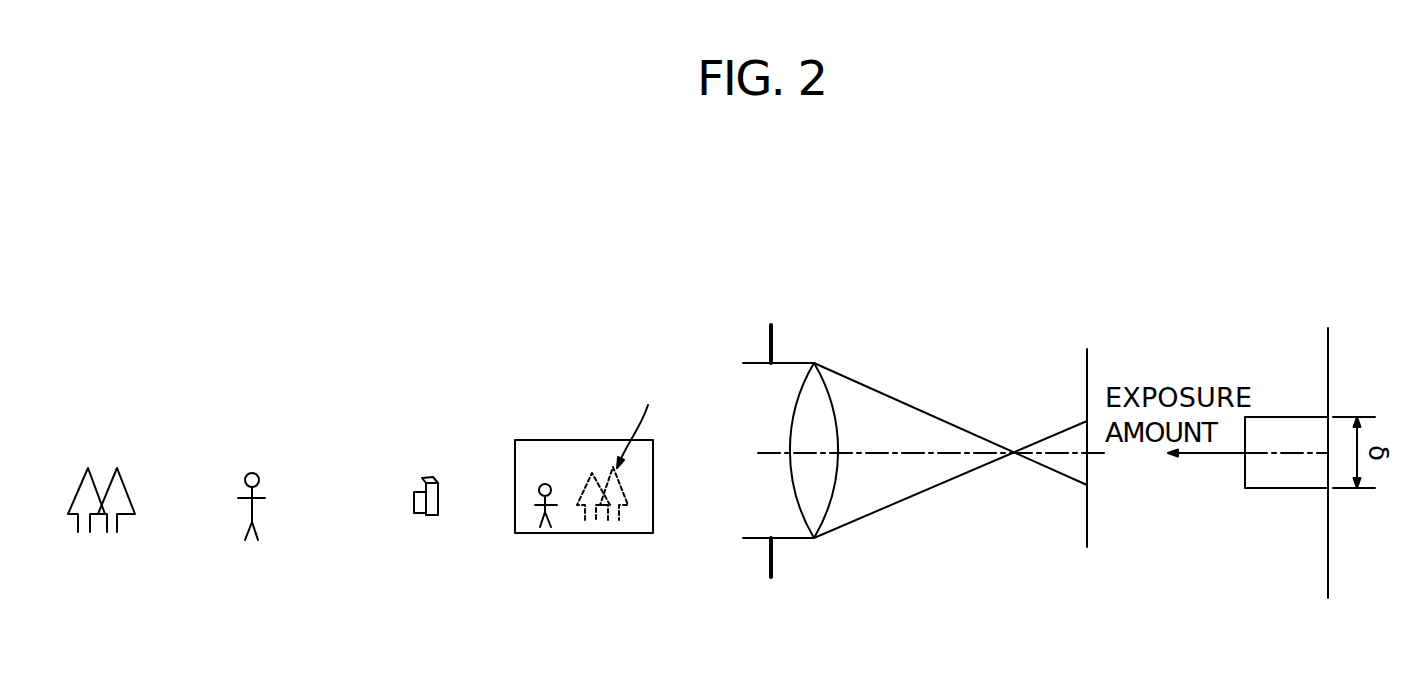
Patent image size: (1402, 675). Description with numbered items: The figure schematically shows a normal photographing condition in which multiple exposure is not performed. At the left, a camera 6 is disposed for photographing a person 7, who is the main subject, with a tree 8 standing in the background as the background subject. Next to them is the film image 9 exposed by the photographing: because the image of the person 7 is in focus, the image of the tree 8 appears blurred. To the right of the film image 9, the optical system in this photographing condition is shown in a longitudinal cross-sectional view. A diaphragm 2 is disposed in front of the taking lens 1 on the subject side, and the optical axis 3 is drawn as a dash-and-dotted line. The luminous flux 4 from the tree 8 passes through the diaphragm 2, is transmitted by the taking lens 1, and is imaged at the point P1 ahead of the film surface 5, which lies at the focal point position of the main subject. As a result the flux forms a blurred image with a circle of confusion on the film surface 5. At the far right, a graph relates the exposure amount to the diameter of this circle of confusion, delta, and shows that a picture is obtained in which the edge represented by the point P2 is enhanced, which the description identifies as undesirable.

The taking lens 1 is at (817, 403).
The diaphragm 2 is at (775, 335).
The optical axis 3 is at (935, 452).
The luminous flux 4 is at (752, 362).
The film surface 5 is at (1087, 380).
The camera 6 is at (430, 457).
The person 7 is at (252, 460).
The tree 8 is at (103, 460).
The film image 9 is at (532, 440).
The imaging point P1 is at (1015, 455).
The edge point P2 is at (1245, 488).